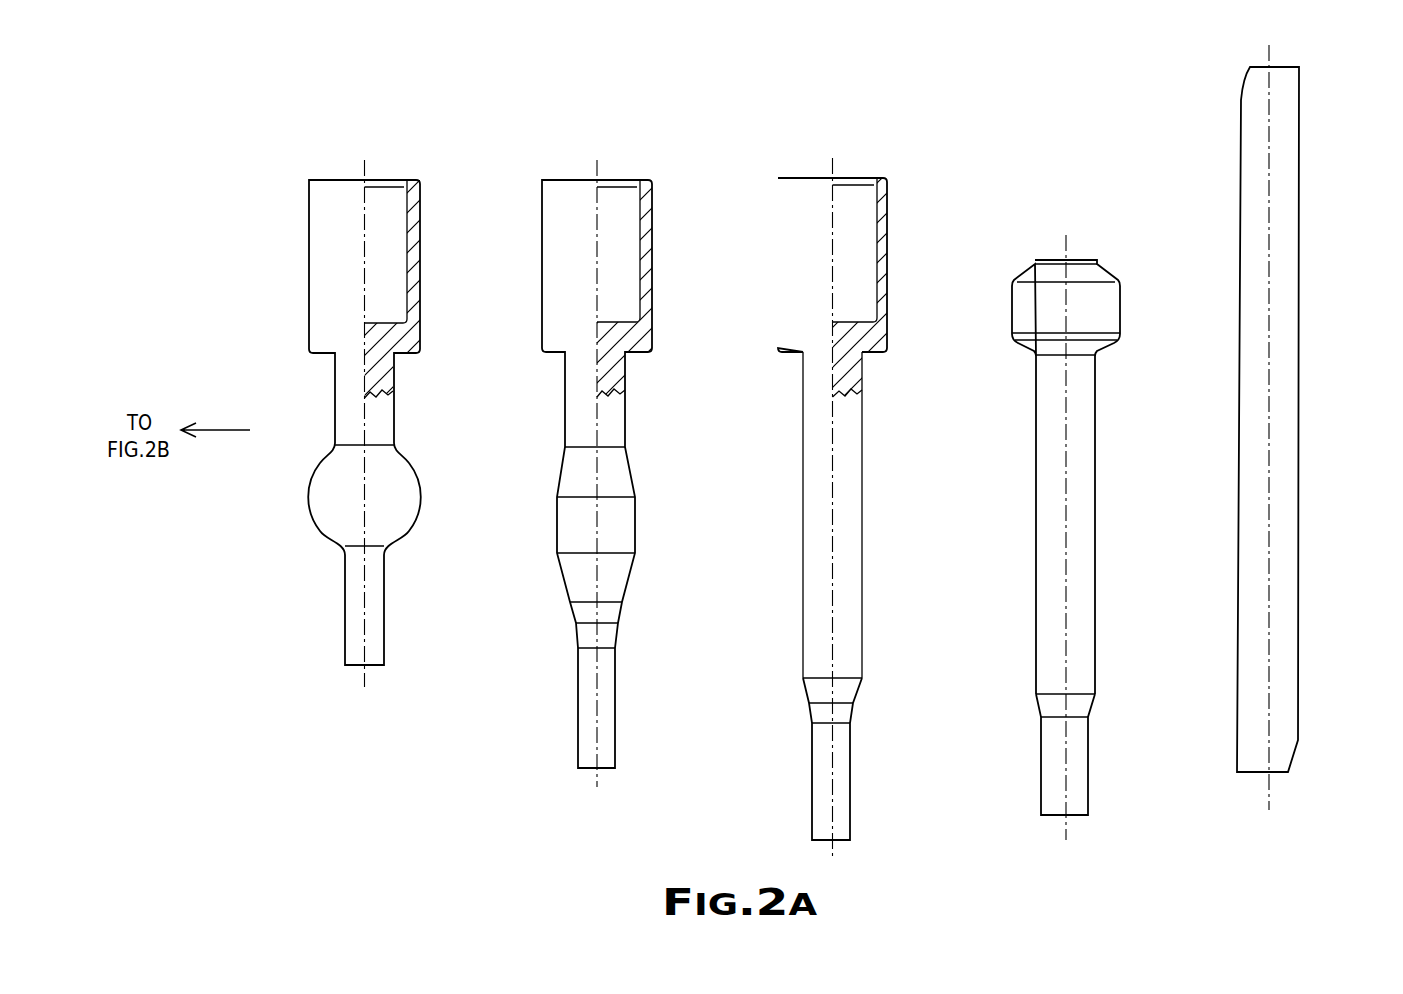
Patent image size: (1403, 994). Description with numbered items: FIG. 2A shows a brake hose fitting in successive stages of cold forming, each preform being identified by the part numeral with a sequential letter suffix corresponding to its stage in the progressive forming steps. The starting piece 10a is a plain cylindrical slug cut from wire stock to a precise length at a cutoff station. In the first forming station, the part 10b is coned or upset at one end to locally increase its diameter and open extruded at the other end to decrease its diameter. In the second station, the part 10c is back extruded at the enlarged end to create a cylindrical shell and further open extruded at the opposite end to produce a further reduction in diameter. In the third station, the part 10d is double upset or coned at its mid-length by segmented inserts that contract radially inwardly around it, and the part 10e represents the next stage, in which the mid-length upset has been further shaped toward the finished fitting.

The starting piece 10a is at (1299, 307).
The part 10b is at (1101, 533).
The part 10c is at (870, 509).
The part 10d is at (636, 521).
The part 10e is at (418, 478).